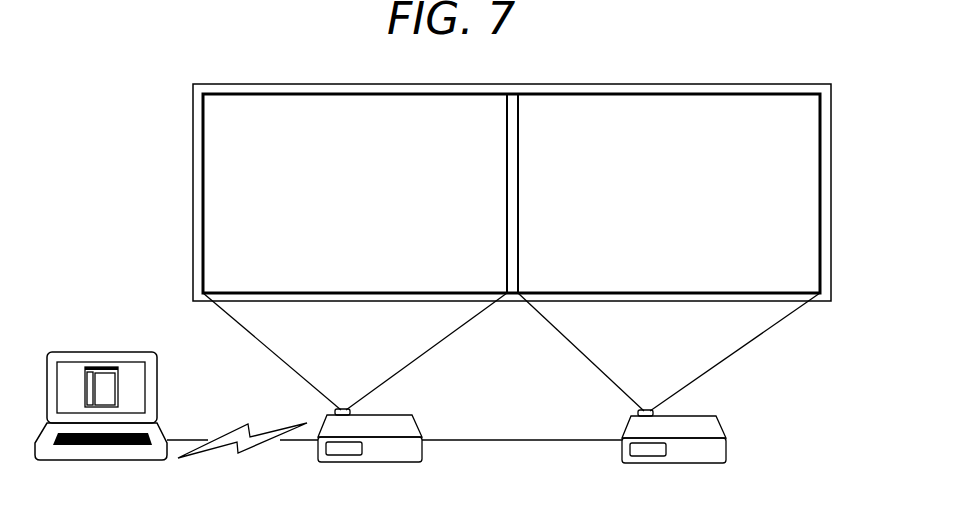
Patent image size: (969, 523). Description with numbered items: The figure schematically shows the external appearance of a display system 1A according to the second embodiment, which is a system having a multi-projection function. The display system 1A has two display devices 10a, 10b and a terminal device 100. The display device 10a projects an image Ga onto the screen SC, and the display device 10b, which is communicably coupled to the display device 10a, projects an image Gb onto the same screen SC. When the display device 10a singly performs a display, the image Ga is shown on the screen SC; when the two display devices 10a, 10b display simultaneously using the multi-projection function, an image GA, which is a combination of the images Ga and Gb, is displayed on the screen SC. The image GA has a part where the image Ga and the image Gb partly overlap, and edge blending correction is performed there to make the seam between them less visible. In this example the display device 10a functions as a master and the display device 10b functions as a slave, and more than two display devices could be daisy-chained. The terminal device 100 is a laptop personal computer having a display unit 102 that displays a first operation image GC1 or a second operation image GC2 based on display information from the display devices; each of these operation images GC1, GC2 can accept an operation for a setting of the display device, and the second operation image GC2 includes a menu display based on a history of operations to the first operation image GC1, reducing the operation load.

The display system 1A is at (90, 137).
The screen SC is at (193, 177).
The image GA is at (195, 200).
The image Ga is at (217, 229).
The image Gb is at (810, 238).
The display device 10a is at (425, 420).
The display device 10b is at (727, 421).
The terminal device 100 is at (147, 372).
The display unit 102 is at (143, 372).
The first operation image GC1 is at (172, 387).
The second operation image GC2 is at (128, 394).